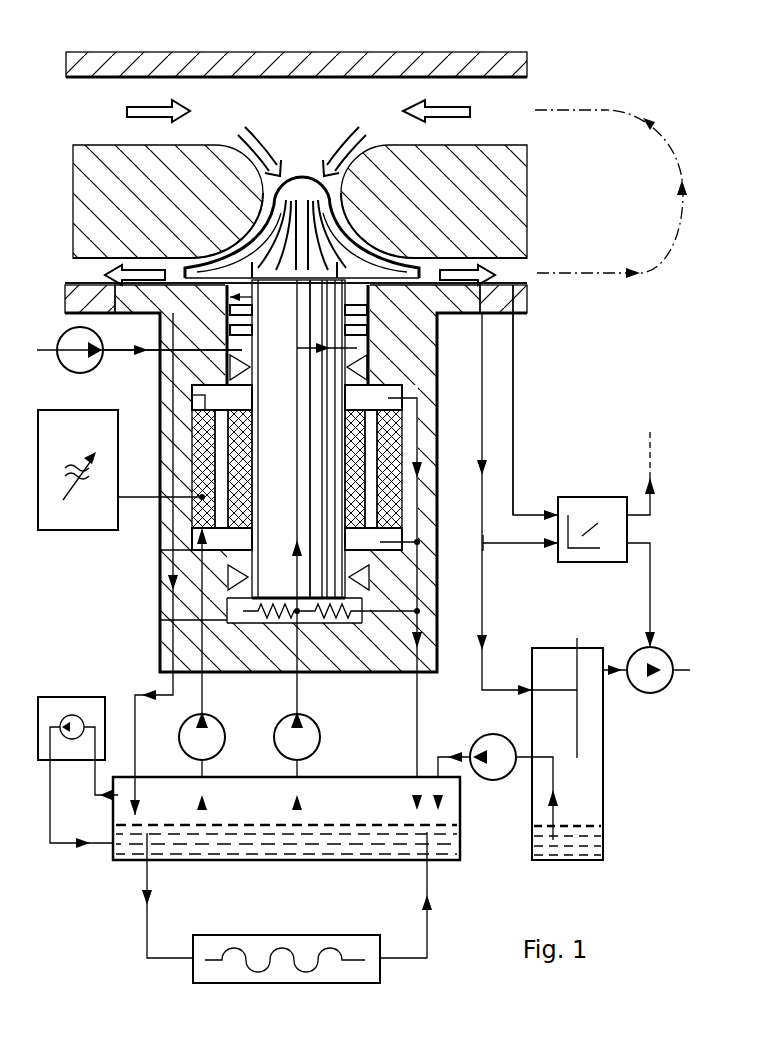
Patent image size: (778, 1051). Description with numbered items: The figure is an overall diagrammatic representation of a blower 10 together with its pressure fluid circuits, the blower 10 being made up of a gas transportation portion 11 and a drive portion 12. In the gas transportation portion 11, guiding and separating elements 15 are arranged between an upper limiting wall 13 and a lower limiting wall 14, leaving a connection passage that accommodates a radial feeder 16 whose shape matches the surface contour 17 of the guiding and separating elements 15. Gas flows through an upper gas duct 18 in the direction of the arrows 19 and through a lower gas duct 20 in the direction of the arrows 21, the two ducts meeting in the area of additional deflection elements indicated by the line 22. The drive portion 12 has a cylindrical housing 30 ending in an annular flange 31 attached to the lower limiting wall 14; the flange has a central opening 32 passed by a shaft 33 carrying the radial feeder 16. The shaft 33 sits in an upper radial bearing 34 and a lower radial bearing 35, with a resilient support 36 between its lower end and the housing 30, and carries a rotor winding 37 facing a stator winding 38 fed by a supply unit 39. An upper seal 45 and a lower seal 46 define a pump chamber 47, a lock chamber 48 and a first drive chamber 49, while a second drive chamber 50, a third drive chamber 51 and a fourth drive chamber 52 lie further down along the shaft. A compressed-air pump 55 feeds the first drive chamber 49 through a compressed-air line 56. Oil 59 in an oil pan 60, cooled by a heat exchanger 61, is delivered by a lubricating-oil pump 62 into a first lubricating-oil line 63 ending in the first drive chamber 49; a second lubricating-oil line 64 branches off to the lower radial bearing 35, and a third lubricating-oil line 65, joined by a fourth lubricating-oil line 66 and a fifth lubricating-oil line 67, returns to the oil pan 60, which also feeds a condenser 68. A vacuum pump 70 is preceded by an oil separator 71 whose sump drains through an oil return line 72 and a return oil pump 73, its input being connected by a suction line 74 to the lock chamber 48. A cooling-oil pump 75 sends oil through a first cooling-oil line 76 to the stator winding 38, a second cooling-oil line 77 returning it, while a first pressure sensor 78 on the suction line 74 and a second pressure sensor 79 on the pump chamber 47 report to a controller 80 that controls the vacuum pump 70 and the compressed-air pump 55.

The blower 10 is at (115, 917).
The gas transportation portion 11 is at (374, 44).
The drive portion 12 is at (556, 420).
The upper limiting wall 13 is at (515, 63).
The lower limiting wall 14 is at (500, 313).
The guiding and separating elements 15 is at (95, 187).
The radial feeder 16 is at (302, 182).
The surface contour 17 is at (262, 165).
The upper gas duct 18 is at (450, 97).
The arrows 19 is at (137, 108).
The lower gas duct 20 is at (78, 268).
The arrows 21 is at (488, 275).
The line 22 is at (620, 108).
The cylindrical housing 30 is at (385, 668).
The annular flange 31 is at (142, 302).
The opening 32 is at (252, 297).
The shaft 33 is at (258, 407).
The upper radial bearing 34 is at (222, 367).
The lower radial bearing 35 is at (170, 605).
The resilient support 36 is at (275, 645).
The rotor winding 37 is at (247, 465).
The stator winding 38 is at (200, 460).
The supply unit 39 is at (83, 528).
The upper seal 45 is at (244, 310).
The lower seal 46 is at (244, 330).
The pump chamber 47 is at (427, 280).
The lock chamber 48 is at (332, 330).
The first drive chamber 49 is at (242, 365).
The second drive chamber 50 is at (244, 412).
The third drive chamber 51 is at (238, 540).
The fourth drive chamber 52 is at (240, 580).
The compressed-air pump 55 is at (84, 362).
The compressed-air line 56 is at (120, 350).
The oil 59 is at (387, 845).
The oil pan 60 is at (257, 810).
The heat exchanger 61 is at (297, 977).
The lubricating-oil pump 62 is at (318, 748).
The first lubricating-oil line 63 is at (300, 692).
The second lubricating-oil line 64 is at (253, 630).
The third lubricating-oil line 65 is at (420, 437).
The fourth lubricating-oil line 66 is at (405, 532).
The fifth lubricating-oil line 67 is at (405, 608).
The condenser 68 is at (62, 697).
The vacuum pump 70 is at (645, 690).
The oil separator 71 is at (568, 655).
The oil return line 72 is at (530, 770).
The return oil pump 73 is at (492, 742).
The suction line 74 is at (483, 600).
The cooling-oil pump 75 is at (222, 745).
The first cooling-oil line 76 is at (200, 697).
The second cooling-oil line 77 is at (165, 652).
The first pressure sensor 78 is at (485, 543).
The second pressure sensor 79 is at (525, 283).
The controller 80 is at (580, 512).